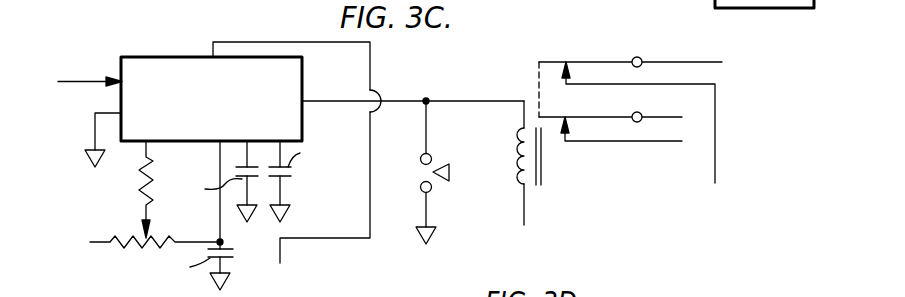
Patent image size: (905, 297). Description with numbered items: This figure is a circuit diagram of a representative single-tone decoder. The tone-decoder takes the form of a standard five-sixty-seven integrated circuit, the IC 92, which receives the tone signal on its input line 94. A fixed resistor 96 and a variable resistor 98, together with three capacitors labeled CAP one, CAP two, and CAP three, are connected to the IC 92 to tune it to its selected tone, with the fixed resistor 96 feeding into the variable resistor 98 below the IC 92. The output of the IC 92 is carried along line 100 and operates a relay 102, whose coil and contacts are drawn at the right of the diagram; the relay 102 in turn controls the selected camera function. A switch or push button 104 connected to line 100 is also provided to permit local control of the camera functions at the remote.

The 567 IC 92 is at (167, 55).
The input line 94 is at (83, 80).
The fixed resistor 96 is at (146, 200).
The variable resistor 98 is at (117, 244).
The line 100 is at (403, 101).
The relay 102 is at (577, 164).
The switch or push button 104 is at (457, 157).